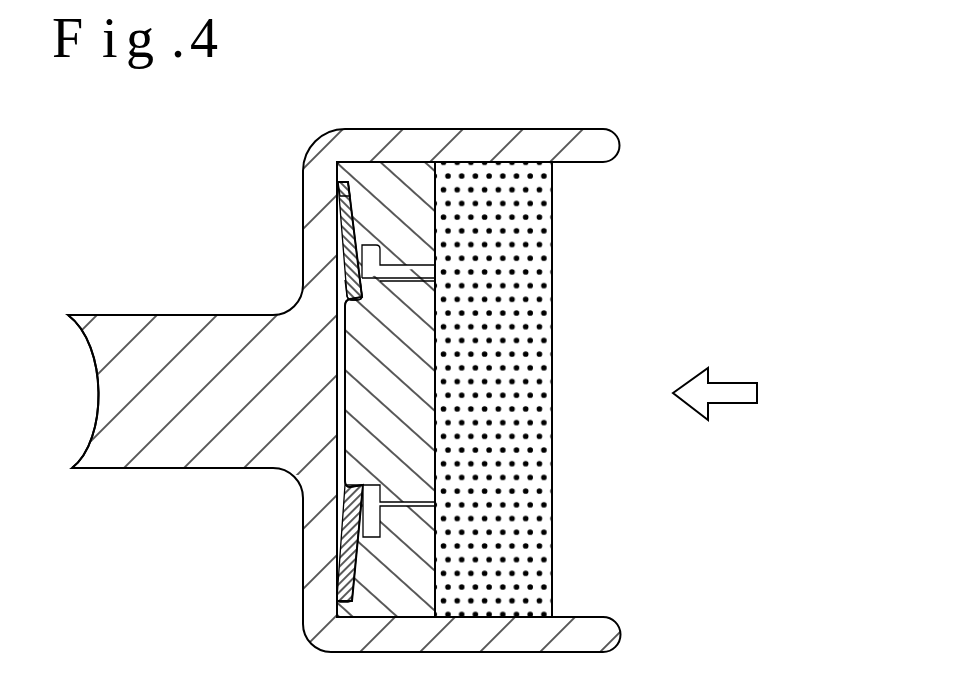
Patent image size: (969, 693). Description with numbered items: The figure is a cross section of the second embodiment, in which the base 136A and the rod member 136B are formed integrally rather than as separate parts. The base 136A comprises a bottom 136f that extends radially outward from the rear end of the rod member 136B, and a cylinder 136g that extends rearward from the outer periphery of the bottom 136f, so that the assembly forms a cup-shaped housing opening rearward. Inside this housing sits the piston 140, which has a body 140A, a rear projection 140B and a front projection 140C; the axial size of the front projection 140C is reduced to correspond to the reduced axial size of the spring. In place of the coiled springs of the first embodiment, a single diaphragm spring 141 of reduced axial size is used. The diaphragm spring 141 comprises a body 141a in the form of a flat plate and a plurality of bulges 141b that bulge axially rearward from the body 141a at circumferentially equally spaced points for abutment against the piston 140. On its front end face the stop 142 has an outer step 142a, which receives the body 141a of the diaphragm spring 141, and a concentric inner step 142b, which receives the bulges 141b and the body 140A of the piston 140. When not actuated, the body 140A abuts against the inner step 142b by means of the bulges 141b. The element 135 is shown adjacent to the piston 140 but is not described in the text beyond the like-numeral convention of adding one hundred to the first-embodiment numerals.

The magnet 135 is at (545, 442).
The base 136A is at (571, 127).
The rod member 136B is at (115, 320).
The bottom 136f is at (302, 177).
The cylinder 136g is at (472, 138).
The piston 140 is at (438, 470).
The body of the piston 140A is at (375, 265).
The rear projection 140B is at (427, 360).
The front projection 140C is at (357, 375).
The diaphragm spring 141 is at (338, 212).
The body of the diaphragm spring 141a is at (340, 228).
The bulges 141b is at (350, 276).
The stop 142 is at (404, 222).
The outer step 142a is at (352, 580).
The inner step 142b is at (380, 530).